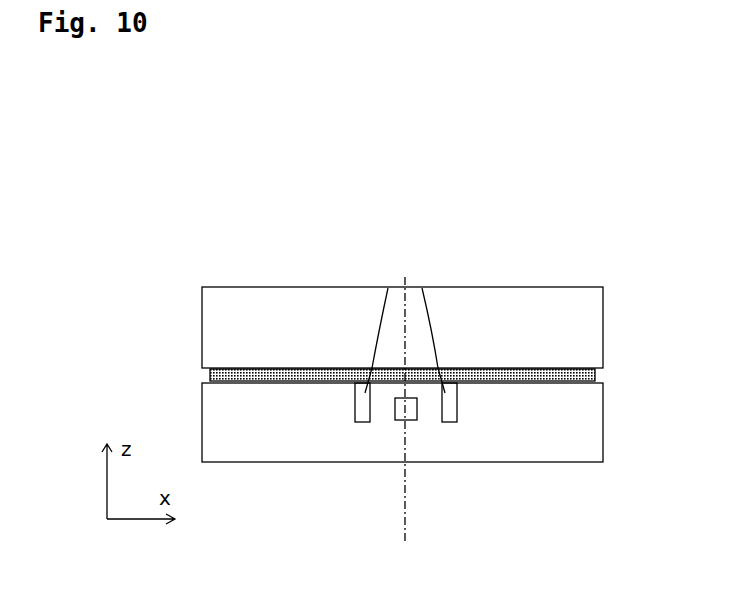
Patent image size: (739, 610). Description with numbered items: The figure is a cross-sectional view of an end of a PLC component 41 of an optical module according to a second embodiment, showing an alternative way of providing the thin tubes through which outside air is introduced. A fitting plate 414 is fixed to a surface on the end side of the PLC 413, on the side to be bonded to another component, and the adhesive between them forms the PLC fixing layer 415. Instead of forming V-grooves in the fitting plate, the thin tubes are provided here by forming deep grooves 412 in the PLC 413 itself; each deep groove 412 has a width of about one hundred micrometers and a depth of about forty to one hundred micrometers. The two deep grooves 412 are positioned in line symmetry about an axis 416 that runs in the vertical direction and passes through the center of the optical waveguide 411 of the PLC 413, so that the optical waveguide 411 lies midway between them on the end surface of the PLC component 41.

The PLC component 41 is at (408, 143).
The optical waveguide 411 is at (405, 410).
The deep groove 412 is at (422, 288).
The PLC 413 is at (594, 432).
The fitting plate 414 is at (597, 313).
The PLC fixing layer 415 is at (597, 372).
The axis 416 is at (405, 507).